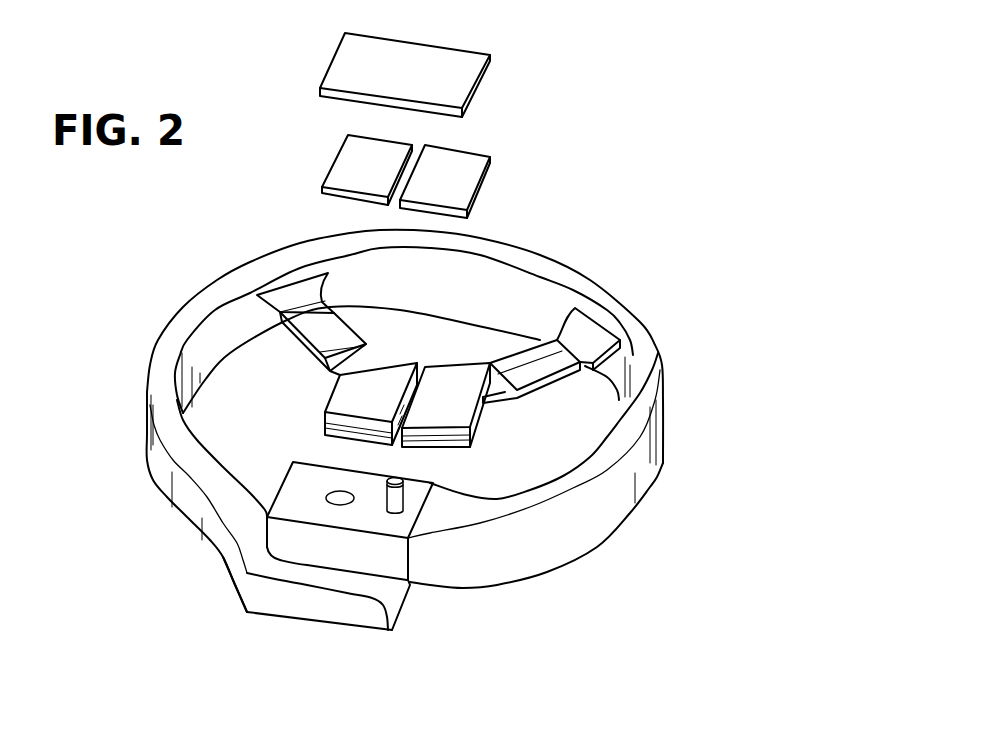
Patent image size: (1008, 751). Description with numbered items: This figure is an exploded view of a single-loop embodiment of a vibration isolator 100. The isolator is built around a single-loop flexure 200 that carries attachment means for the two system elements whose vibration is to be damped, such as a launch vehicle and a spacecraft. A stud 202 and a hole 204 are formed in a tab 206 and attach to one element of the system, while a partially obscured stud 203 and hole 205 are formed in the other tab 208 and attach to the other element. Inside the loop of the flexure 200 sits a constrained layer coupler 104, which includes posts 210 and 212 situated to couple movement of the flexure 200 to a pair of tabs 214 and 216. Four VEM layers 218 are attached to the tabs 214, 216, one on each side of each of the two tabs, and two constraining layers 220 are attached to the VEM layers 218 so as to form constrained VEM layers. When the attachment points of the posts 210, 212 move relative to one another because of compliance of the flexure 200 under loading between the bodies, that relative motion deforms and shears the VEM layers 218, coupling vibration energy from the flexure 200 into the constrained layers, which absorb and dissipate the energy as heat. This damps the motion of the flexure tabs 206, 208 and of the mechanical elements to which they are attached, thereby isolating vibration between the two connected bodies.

The vibration isolator 100 is at (588, 153).
The constrained layer coupler 104 is at (298, 399).
The single-loop flexure 200 is at (602, 281).
The stud 202 is at (398, 493).
The stud 203 is at (258, 615).
The hole 204 is at (340, 497).
The hole 205 is at (302, 610).
The tab 206 is at (366, 524).
The tab 208 is at (320, 580).
The post 210 is at (557, 378).
The post 212 is at (354, 328).
The tab 214 is at (478, 413).
The tab 216 is at (383, 370).
The VEM layers 218 is at (403, 138).
The constraining layers 220 is at (480, 80).